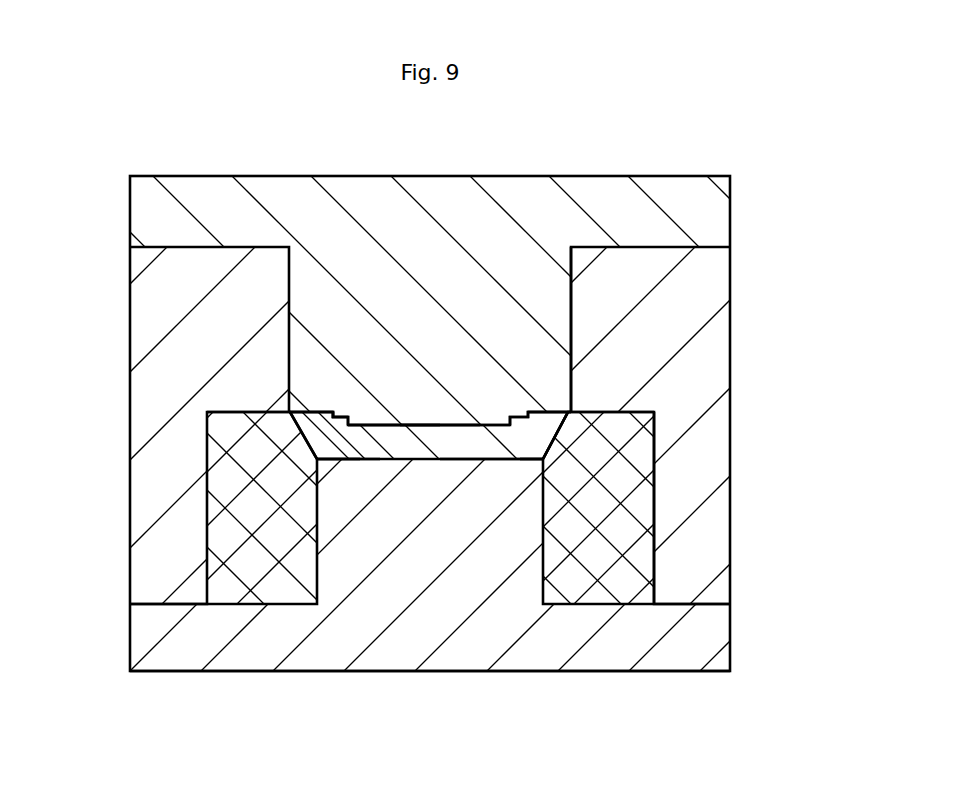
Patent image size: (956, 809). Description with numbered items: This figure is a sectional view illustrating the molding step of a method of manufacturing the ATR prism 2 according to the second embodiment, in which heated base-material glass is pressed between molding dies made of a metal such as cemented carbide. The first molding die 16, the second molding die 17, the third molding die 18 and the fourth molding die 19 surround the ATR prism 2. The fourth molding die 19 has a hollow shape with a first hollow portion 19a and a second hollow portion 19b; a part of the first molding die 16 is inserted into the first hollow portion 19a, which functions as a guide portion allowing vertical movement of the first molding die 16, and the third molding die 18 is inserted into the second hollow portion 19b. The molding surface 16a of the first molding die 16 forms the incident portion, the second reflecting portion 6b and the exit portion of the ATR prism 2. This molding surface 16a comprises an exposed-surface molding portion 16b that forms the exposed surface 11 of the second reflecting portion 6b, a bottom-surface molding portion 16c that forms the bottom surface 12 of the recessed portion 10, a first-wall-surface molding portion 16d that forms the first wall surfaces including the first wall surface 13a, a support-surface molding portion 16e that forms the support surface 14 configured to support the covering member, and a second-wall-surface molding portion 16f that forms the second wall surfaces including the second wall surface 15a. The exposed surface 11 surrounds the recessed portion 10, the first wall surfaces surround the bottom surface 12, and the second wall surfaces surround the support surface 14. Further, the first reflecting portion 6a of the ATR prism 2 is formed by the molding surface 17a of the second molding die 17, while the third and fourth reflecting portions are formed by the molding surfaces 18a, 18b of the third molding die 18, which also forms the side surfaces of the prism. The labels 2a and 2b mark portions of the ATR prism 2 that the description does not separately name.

The ATR prism 2 is at (351, 460).
The upper surface of workpiece 2a is at (402, 462).
The shoulder of workpiece 2b is at (327, 420).
The first reflecting portion 6a is at (311, 442).
The second reflecting portion 6b is at (482, 416).
The recessed portion 10 is at (502, 416).
The exposed surface 11 is at (552, 420).
The bottom surface 12 is at (418, 433).
The first wall surface 13a is at (360, 423).
The support surface 14 is at (340, 418).
The second wall surface 15a is at (343, 423).
The first molding die 16 is at (608, 196).
The molding surface 16a is at (443, 452).
The exposed-surface molding portion 16b is at (549, 417).
The bottom-surface molding portion 16c is at (364, 449).
The first-wall-surface molding portion 16d is at (518, 458).
The support-surface molding portion 16e is at (532, 458).
The second-wall-surface molding portion 16f is at (543, 458).
The second molding die 17 is at (311, 652).
The molding surface 17a is at (472, 440).
The third molding die 18 is at (621, 541).
The molding surface 18a is at (350, 458).
The molding surface 18b is at (540, 420).
The fourth molding die 19 is at (733, 285).
The first hollow portion 19a is at (566, 297).
The second hollow portion 19b is at (652, 486).